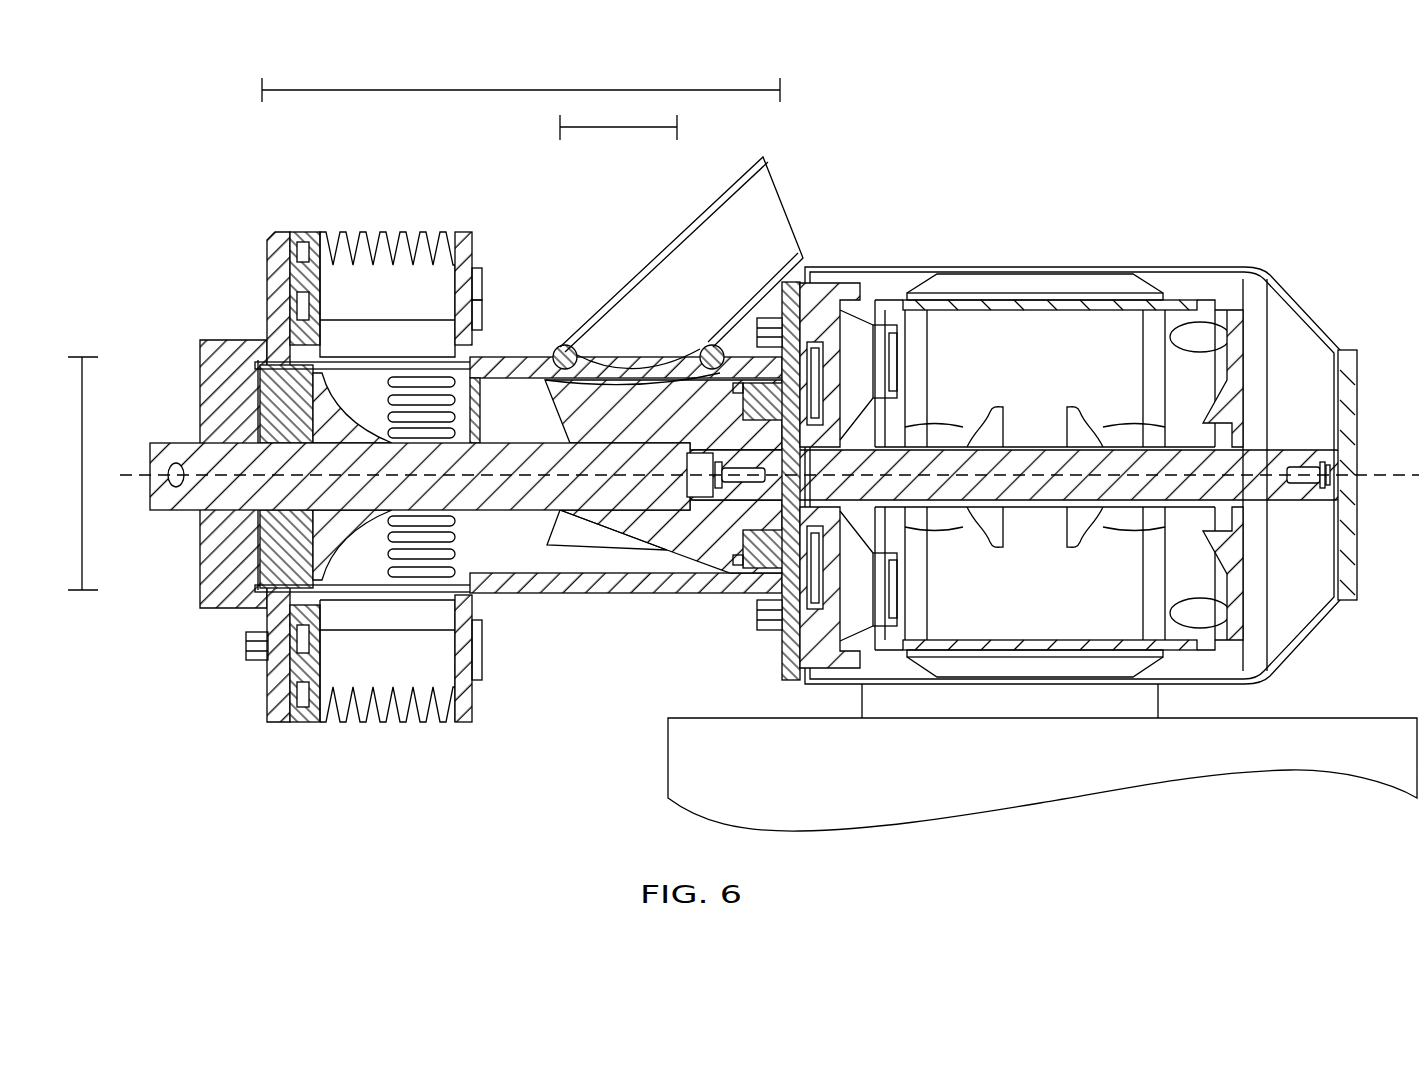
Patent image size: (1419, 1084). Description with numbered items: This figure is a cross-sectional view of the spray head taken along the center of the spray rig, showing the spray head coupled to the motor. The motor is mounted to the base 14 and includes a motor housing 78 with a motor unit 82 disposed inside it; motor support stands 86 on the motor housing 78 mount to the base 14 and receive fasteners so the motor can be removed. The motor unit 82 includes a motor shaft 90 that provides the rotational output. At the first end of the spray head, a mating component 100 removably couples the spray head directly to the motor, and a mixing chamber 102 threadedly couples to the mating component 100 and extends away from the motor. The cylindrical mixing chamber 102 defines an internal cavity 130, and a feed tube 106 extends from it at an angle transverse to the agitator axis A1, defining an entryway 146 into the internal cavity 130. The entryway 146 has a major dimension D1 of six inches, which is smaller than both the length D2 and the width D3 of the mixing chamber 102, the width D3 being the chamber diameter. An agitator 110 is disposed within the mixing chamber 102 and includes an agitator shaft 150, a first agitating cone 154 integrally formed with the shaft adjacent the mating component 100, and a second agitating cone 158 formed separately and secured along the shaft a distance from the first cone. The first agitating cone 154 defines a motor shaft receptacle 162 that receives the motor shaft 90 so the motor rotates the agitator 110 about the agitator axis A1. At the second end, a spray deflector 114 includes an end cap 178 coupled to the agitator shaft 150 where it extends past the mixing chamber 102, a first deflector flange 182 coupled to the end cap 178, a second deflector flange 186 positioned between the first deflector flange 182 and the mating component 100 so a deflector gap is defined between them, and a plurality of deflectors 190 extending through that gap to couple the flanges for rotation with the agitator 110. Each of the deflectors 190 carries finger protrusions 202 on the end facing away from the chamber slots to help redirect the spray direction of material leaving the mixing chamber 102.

The base 14 is at (1243, 720).
The motor housing 78 is at (1200, 283).
The motor unit 82 is at (1058, 592).
The motor support stands 86 is at (1010, 720).
The motor shaft 90 is at (1013, 466).
The mating component 100 is at (792, 315).
The mixing chamber 102 is at (553, 578).
The feed tube 106 is at (677, 243).
The agitator 110 is at (572, 512).
The spray deflector 114 is at (276, 305).
The internal cavity 130 is at (520, 383).
The entryway 146 is at (615, 318).
The agitator shaft 150 is at (192, 508).
The first agitating cone 154 is at (660, 527).
The second agitating cone 158 is at (262, 612).
The motor shaft receptacle 162 is at (703, 512).
The end cap 178 is at (215, 596).
The first deflector flange 182 is at (306, 265).
The second deflector flange 186 is at (466, 235).
The plurality of deflectors 190 is at (362, 300).
The finger protrusions 202 is at (363, 716).
The agitator axis A1 is at (162, 462).
The major dimension D1 is at (600, 130).
The length D2 is at (651, 90).
The width D3 is at (85, 602).